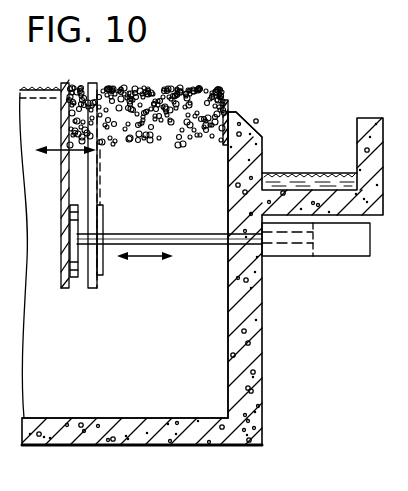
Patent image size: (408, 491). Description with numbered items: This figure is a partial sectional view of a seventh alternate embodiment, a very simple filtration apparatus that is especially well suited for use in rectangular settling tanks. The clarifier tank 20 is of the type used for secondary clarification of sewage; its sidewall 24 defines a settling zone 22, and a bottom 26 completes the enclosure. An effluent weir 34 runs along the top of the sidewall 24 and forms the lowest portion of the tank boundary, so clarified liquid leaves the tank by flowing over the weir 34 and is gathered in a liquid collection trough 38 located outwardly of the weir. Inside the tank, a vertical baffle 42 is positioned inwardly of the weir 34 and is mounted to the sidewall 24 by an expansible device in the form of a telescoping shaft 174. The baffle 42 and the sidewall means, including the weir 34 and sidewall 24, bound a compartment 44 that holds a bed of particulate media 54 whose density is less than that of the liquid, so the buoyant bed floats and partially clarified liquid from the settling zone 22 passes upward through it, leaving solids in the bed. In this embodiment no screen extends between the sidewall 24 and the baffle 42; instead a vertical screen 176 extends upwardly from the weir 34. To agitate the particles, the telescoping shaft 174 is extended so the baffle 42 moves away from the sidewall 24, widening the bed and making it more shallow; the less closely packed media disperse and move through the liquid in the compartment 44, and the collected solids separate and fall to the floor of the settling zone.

The clarifier tank 20 is at (290, 307).
The settling zone 22 is at (200, 404).
The sidewall 24 is at (262, 330).
The bottom 26 is at (88, 443).
The effluent weir 34 is at (228, 112).
The liquid collection trough 38 is at (313, 150).
The vertical baffle 42 is at (62, 277).
The compartment 44 is at (143, 93).
The particulate media 54 is at (180, 90).
The telescoping shaft 174 is at (187, 247).
The vertical screen 176 is at (215, 92).